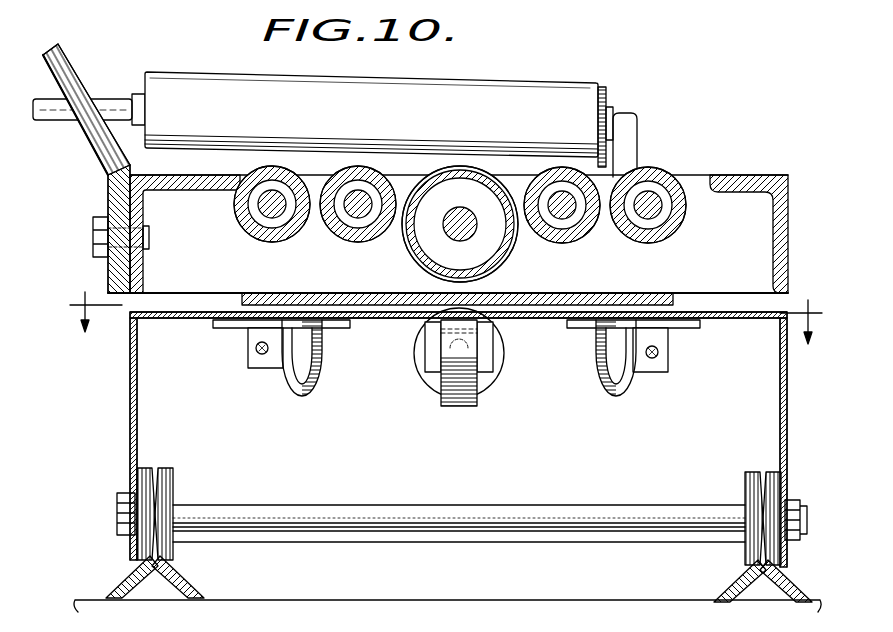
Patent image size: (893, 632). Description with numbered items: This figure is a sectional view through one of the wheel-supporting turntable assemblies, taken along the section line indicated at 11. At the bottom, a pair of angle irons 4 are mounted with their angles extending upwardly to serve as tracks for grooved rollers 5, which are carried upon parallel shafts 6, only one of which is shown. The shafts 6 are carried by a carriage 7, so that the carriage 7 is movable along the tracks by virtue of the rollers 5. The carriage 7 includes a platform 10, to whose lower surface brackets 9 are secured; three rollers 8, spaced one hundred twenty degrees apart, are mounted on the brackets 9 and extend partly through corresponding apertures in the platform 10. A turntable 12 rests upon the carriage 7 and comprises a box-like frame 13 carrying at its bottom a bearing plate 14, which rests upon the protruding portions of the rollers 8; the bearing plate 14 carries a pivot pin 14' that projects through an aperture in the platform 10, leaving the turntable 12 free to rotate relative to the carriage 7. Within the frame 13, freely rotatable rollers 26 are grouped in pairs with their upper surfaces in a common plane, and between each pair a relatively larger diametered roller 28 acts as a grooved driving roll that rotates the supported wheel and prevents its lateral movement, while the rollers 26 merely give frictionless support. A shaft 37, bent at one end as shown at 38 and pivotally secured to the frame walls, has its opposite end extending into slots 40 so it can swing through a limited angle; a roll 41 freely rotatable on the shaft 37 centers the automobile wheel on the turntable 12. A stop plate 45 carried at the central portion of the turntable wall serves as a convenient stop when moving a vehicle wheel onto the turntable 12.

The angle irons 4 is at (182, 583).
The grooved rollers 5 is at (172, 486).
The shafts 6 is at (342, 508).
The carriage 7 is at (137, 390).
The rollers 8 is at (283, 396).
The brackets 9 is at (258, 366).
The platform 10 is at (712, 318).
The section line 11 is at (94, 290).
The turntable 12 is at (698, 167).
The box-like frame 13 is at (146, 212).
The bearing plate 14 is at (457, 278).
The pivot pin 14' is at (487, 357).
The roller 26 is at (293, 241).
The roller 28 is at (413, 242).
The shafts 37 is at (115, 104).
The bent portion 38 is at (638, 117).
The slots 40 is at (102, 150).
The rolls 41 is at (507, 80).
The stop plate 45 is at (68, 62).